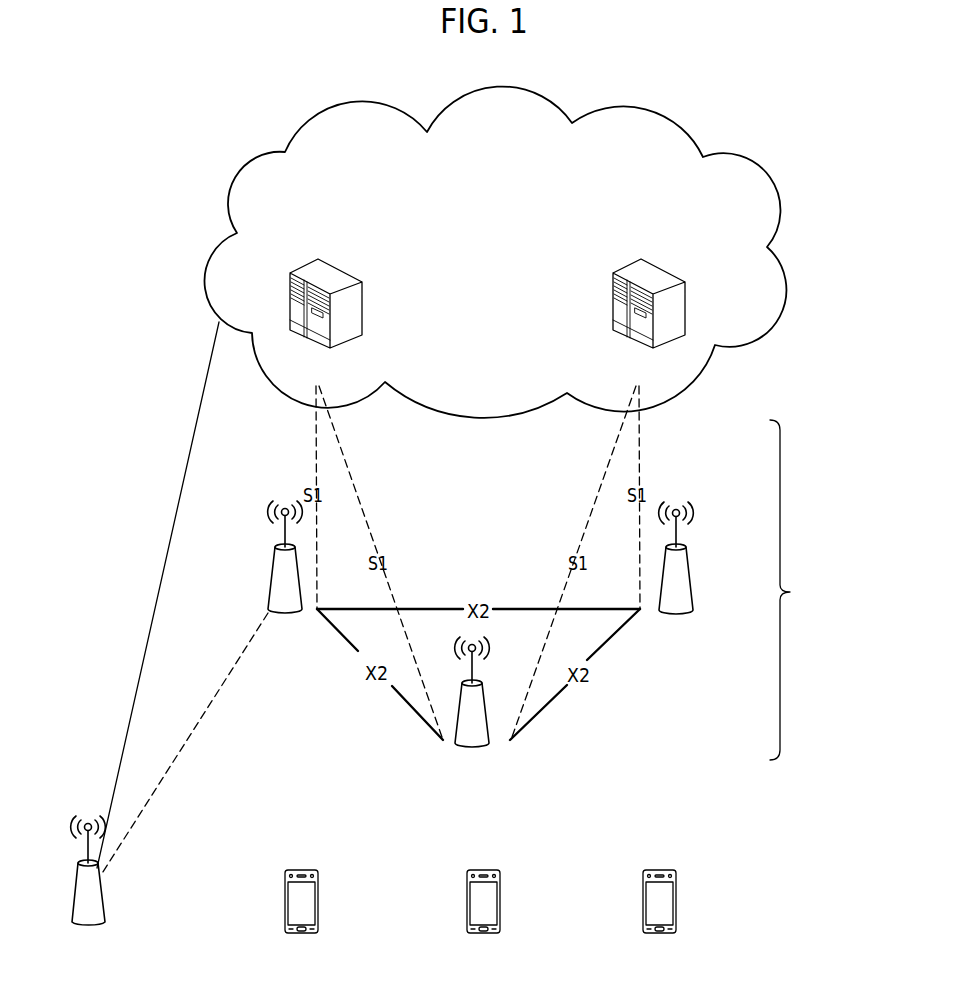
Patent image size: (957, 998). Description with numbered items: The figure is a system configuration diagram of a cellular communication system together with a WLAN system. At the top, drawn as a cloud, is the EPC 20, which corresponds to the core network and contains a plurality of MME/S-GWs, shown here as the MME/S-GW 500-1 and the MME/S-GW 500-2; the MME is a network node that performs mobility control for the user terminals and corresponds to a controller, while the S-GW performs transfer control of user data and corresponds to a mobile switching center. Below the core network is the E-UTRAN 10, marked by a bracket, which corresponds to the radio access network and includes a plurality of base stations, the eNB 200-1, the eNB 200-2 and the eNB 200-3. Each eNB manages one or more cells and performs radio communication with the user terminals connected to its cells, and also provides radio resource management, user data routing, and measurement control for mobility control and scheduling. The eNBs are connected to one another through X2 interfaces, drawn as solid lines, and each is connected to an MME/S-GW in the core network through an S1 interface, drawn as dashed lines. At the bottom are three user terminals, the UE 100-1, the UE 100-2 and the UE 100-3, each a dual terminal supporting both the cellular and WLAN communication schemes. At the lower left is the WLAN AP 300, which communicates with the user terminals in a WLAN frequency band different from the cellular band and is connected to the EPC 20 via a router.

The E-UTRAN 10 is at (820, 590).
The EPC 20 is at (685, 121).
The UE 100-1 is at (307, 870).
The UE 100-2 is at (488, 870).
The UE 100-3 is at (665, 870).
The eNB 200-1 is at (270, 580).
The eNB 200-2 is at (487, 720).
The eNB 200-3 is at (690, 561).
The WLAN AP 300 is at (102, 897).
The MME/S-GW 500-1 is at (347, 267).
The MME/S-GW 500-2 is at (652, 267).